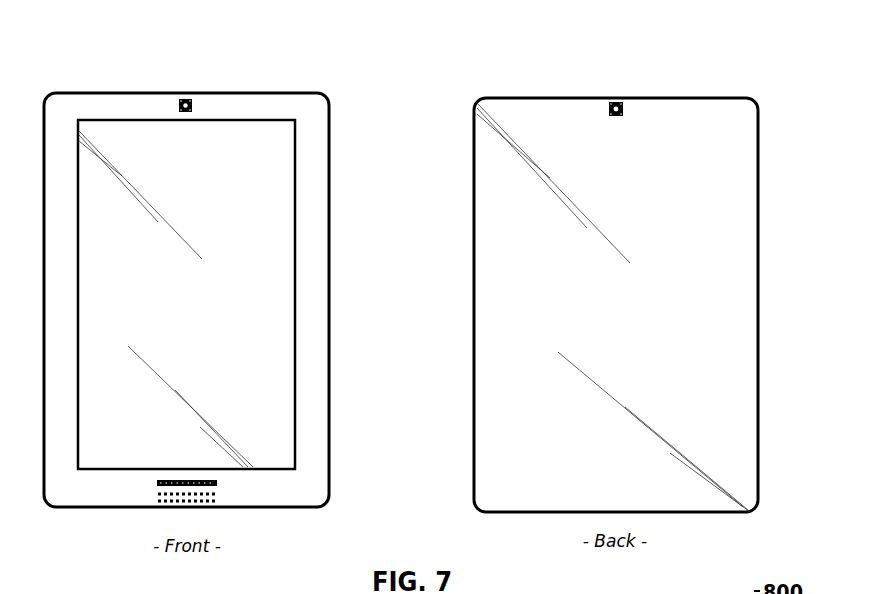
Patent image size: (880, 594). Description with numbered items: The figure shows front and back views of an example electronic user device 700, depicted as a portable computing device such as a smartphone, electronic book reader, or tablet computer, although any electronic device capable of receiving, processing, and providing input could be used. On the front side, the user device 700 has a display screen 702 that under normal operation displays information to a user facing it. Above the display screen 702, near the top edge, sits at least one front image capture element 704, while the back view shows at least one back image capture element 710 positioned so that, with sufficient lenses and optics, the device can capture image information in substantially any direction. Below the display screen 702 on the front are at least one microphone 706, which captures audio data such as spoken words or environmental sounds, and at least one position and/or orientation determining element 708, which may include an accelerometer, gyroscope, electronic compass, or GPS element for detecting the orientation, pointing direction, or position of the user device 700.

The electronic user device 700 is at (750, 72).
The display screen 702 is at (296, 228).
The front image capture element 704 is at (193, 105).
The microphone 706 is at (157, 483).
The position and/or orientation determining element 708 is at (217, 495).
The back image capture element 710 is at (615, 116).